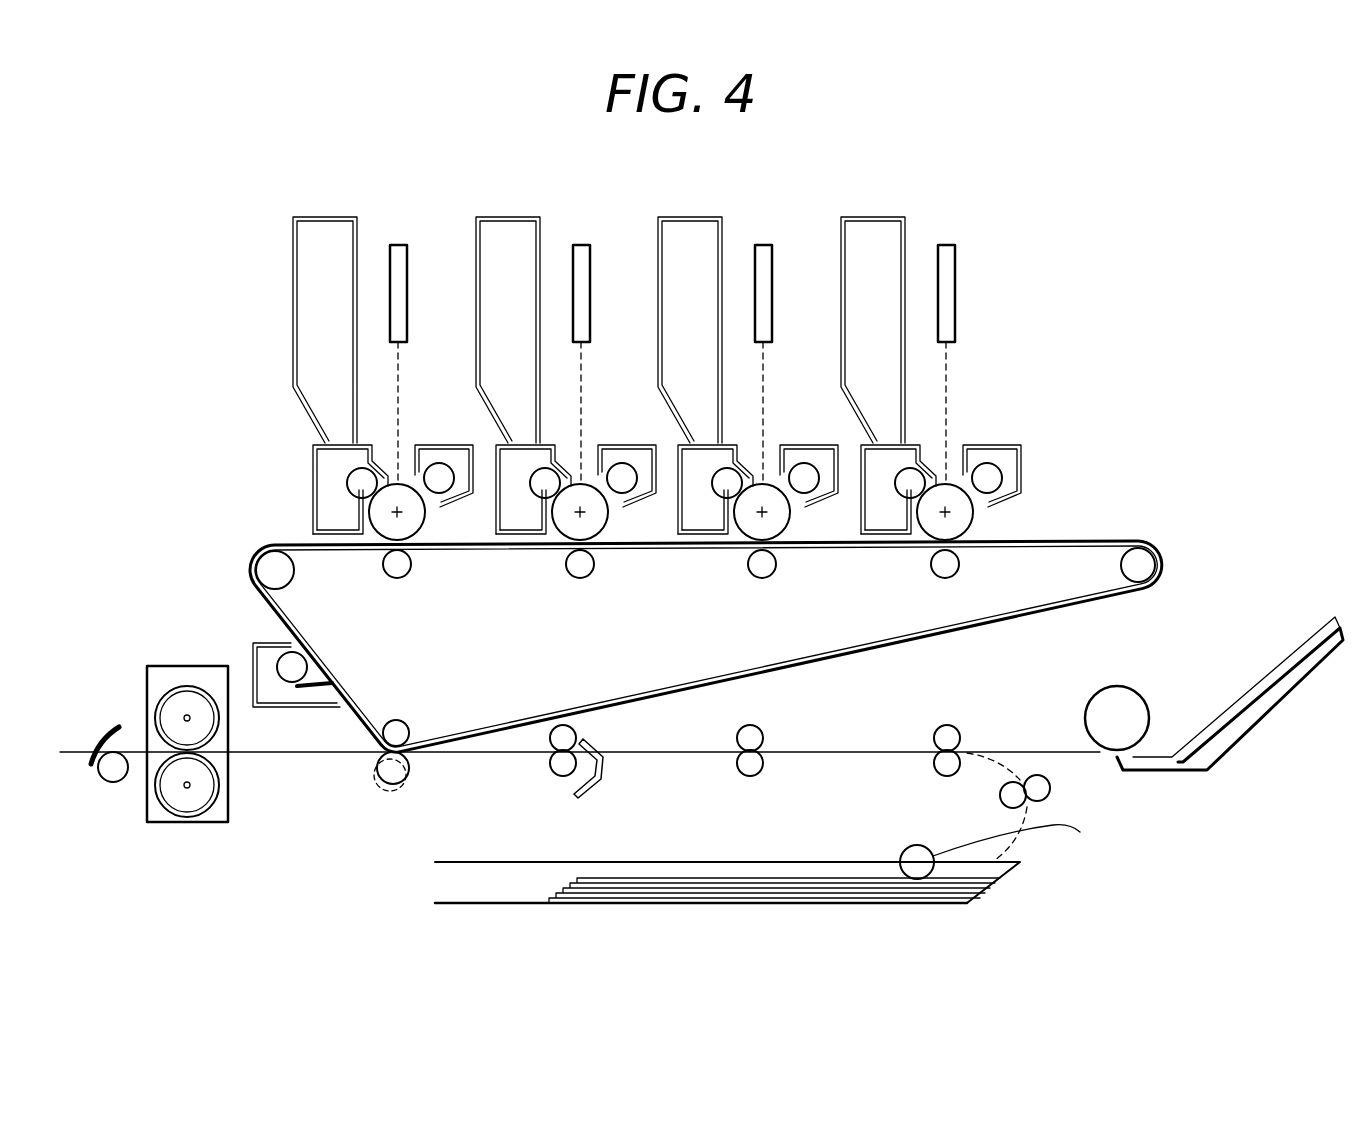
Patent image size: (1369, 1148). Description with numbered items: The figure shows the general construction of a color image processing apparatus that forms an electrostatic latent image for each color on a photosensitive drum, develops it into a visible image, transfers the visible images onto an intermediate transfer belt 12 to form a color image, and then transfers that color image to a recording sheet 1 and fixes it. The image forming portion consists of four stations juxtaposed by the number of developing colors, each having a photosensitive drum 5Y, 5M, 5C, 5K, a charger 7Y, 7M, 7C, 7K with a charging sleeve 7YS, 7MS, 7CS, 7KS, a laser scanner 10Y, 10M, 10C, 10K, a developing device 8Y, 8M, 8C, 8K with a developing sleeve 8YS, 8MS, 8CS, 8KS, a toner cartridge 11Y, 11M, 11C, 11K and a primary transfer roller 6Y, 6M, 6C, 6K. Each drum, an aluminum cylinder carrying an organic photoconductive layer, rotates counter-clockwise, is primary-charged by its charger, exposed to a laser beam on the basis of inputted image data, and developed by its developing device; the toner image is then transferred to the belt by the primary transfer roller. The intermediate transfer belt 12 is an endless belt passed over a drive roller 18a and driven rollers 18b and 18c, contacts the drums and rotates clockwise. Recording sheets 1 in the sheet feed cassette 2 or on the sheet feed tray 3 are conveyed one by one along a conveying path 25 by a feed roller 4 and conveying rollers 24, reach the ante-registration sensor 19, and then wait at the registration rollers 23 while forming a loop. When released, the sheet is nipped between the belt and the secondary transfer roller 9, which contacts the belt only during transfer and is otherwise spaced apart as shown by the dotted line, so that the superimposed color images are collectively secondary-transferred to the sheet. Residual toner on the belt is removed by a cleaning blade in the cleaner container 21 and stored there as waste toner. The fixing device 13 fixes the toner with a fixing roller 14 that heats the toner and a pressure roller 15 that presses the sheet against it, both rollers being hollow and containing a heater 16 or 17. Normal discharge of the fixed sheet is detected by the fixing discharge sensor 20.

The recording sheet 1 is at (853, 880).
The sheet feed cassette 2 is at (752, 862).
The sheet feed tray 3 is at (1292, 698).
The feed roller 4 is at (1097, 746).
The photosensitive drum 5Y is at (405, 484).
The photosensitive drum 5M is at (589, 470).
The photosensitive drum 5C is at (769, 470).
The photosensitive drum 5K is at (952, 470).
The primary transfer roller 6Y is at (397, 579).
The primary transfer roller 6M is at (585, 594).
The primary transfer roller 6C is at (766, 594).
The primary transfer roller 6K is at (948, 609).
The charger 7Y is at (463, 500).
The charger 7M is at (637, 520).
The charger 7C is at (817, 517).
The charger 7K is at (1001, 517).
The charging sleeve 7YS is at (440, 494).
The charging sleeve 7MS is at (635, 544).
The charging sleeve 7CS is at (815, 544).
The charging sleeve 7KS is at (988, 538).
The developing device 8Y is at (326, 535).
The developing device 8M is at (530, 523).
The developing device 8C is at (710, 524).
The developing device 8K is at (895, 524).
The developing sleeve 8YS is at (354, 499).
The developing sleeve 8MS is at (545, 546).
The developing sleeve 8CS is at (728, 541).
The developing sleeve 8KS is at (908, 542).
The secondary transfer roller 9 is at (405, 781).
The laser scanner 10Y is at (402, 245).
The laser scanner 10M is at (598, 337).
The laser scanner 10C is at (778, 337).
The laser scanner 10K is at (962, 337).
The toner cartridge 11Y is at (344, 217).
The toner cartridge 11M is at (521, 304).
The toner cartridge 11C is at (701, 304).
The toner cartridge 11K is at (884, 304).
The intermediate transfer belt 12 is at (575, 707).
The fixing device 13 is at (229, 785).
The fixing roller 14 is at (187, 686).
The pressure roller 15 is at (172, 815).
The heater 16 is at (185, 716).
The heater 17 is at (189, 787).
The drive roller 18a is at (1140, 542).
The driven roller 18b is at (262, 552).
The driven roller 18c is at (403, 721).
The ante-registration sensor 19 is at (596, 786).
The fixing discharge sensor 20 is at (112, 727).
The cleaner container 21 is at (258, 643).
The registration rollers 23 is at (562, 777).
The conveying rollers 24 is at (1040, 776).
The conveying path 25 is at (1062, 750).